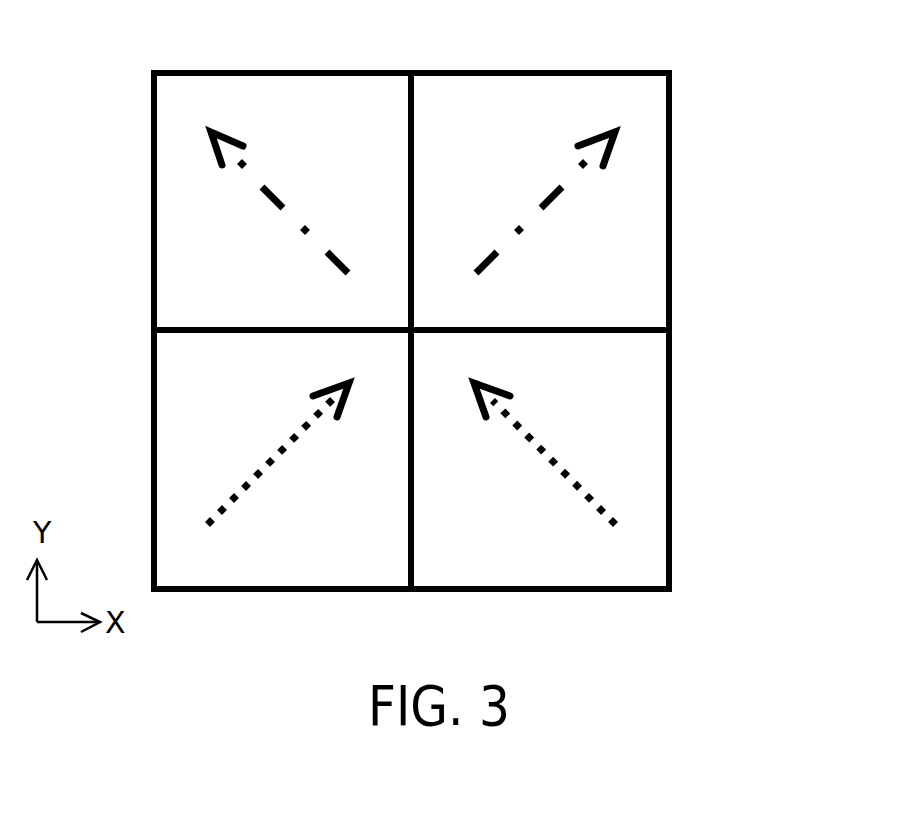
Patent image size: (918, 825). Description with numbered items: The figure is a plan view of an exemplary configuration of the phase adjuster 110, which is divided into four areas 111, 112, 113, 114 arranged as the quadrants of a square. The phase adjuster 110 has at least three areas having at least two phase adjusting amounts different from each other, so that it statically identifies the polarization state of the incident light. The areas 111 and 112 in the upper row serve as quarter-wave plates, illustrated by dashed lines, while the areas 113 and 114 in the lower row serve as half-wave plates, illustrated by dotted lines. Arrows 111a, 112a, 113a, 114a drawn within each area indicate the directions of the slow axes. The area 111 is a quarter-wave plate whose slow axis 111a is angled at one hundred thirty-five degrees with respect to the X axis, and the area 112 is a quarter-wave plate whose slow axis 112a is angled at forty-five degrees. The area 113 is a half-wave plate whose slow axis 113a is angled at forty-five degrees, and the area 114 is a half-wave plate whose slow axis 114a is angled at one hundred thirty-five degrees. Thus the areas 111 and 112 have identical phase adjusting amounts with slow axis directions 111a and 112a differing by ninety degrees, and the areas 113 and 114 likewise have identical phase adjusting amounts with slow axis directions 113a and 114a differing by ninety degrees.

The phase adjuster 110 is at (757, 59).
The area 111 is at (306, 87).
The area 112 is at (498, 87).
The area 113 is at (313, 578).
The area 114 is at (555, 578).
The arrow indicating slow axis direction 111a is at (260, 186).
The arrow indicating slow axis direction 112a is at (560, 195).
The arrow indicating slow axis direction 113a is at (250, 475).
The arrow indicating slow axis direction 114a is at (568, 474).